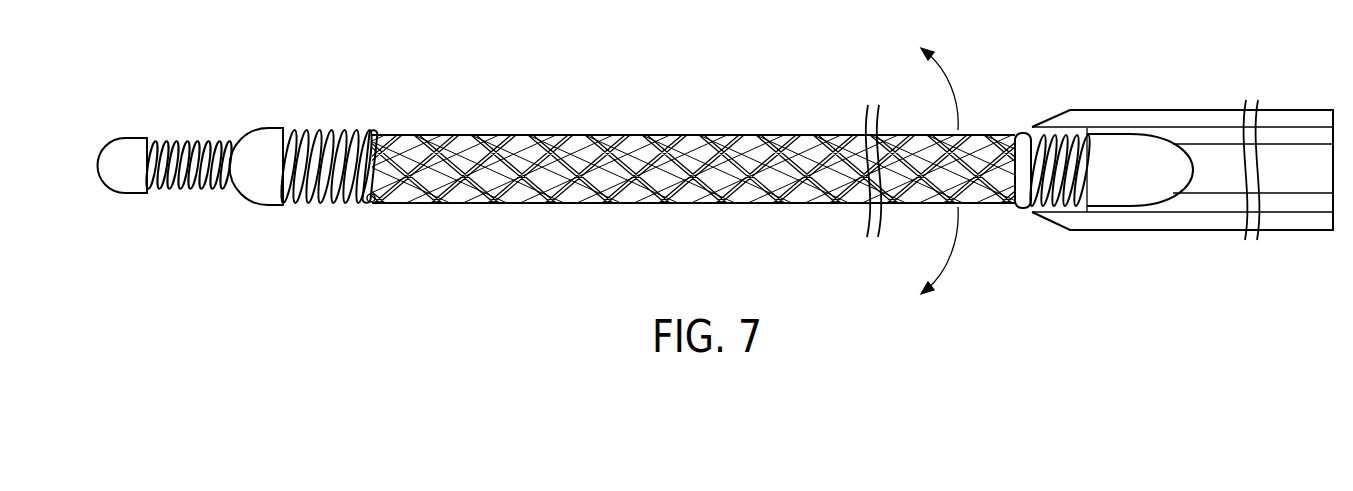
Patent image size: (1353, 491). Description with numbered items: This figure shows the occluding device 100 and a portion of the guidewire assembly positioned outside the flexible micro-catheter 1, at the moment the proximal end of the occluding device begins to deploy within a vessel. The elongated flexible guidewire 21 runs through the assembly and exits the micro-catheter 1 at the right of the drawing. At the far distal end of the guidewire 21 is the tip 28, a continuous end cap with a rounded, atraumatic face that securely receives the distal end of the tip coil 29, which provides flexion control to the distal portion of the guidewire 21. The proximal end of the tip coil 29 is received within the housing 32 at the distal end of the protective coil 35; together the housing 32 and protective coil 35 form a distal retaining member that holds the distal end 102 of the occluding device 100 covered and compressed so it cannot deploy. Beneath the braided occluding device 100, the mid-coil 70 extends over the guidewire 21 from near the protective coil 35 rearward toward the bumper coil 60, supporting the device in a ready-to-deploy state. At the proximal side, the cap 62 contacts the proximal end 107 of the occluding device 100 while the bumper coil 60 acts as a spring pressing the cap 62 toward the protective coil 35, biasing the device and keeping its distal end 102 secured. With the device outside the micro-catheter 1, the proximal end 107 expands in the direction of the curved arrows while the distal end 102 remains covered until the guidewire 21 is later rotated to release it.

The flexible micro-catheter 1 is at (1182, 167).
The guidewire 21 is at (1303, 181).
The tip 28 is at (123, 184).
The tip coil 29 is at (190, 135).
The housing 32 is at (272, 138).
The protective coil 35 is at (332, 135).
The bumper coil 60 is at (1060, 140).
The cap 62 is at (1020, 136).
The mid-coil 70 is at (713, 169).
The occluding device 100 is at (503, 136).
The distal end of the occluding device 102 is at (377, 120).
The proximal end of the occluding device 107 is at (1015, 201).